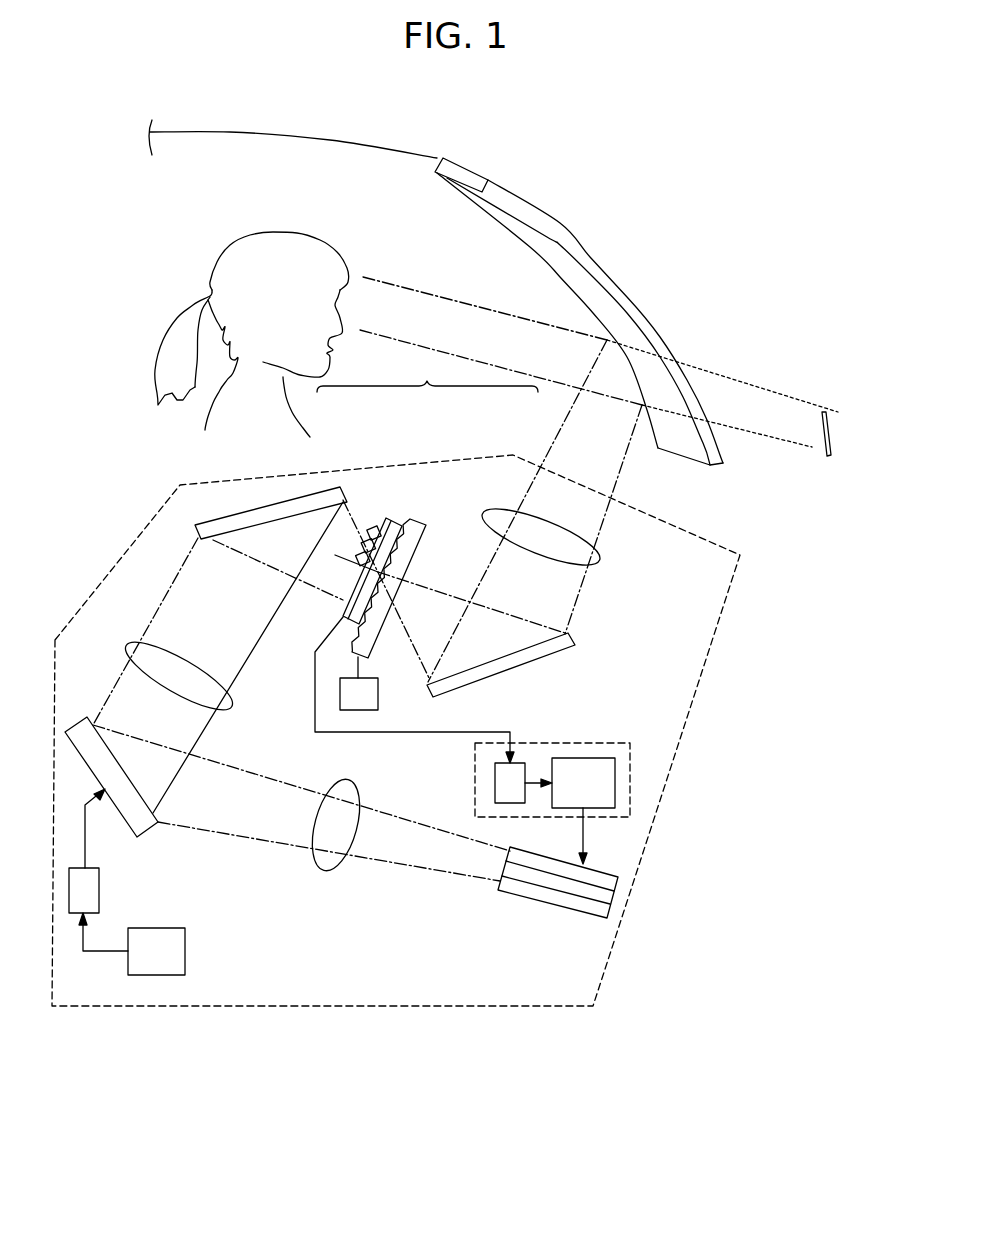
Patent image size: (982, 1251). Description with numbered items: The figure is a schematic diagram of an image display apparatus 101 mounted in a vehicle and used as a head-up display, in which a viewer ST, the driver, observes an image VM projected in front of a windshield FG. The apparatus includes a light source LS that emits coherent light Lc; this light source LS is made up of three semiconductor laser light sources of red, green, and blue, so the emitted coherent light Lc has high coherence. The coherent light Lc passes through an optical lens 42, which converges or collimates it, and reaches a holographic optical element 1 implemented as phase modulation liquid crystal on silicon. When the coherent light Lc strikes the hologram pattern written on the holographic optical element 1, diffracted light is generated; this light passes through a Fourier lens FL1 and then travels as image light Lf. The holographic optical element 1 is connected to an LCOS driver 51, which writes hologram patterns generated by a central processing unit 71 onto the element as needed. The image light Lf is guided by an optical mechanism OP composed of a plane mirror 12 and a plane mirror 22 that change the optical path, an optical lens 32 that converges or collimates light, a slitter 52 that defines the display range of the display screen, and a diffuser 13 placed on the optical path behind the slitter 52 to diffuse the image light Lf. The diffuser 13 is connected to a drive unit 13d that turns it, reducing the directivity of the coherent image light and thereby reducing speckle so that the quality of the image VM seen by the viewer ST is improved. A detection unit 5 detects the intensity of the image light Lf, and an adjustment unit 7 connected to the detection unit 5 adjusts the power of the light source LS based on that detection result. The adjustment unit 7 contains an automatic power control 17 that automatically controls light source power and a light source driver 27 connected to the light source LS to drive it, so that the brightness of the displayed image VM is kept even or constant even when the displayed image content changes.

The holographic optical element 1 is at (142, 822).
The detection unit 5 is at (377, 490).
The adjustment unit 7 is at (600, 751).
The plane mirror 12 is at (248, 517).
The diffuser 13 is at (420, 523).
The drive unit 13d is at (358, 700).
The automatic power control 17 is at (507, 772).
The plane mirror 22 is at (517, 657).
The light source driver 27 is at (585, 773).
The optical lens 32 is at (490, 517).
The optical lens 42 is at (338, 785).
The LCOS driver 51 is at (85, 890).
The slitter 52 is at (397, 523).
The central processing unit 71 is at (173, 953).
The image display apparatus 101 is at (713, 645).
The viewer ST is at (255, 250).
The windshield FG is at (588, 260).
The image VM is at (800, 384).
The optical mechanism OP is at (427, 374).
The image light Lf is at (625, 458).
The coherent light Lc is at (422, 868).
The Fourier lens FL1 is at (153, 663).
The light source LS is at (805, 1046).